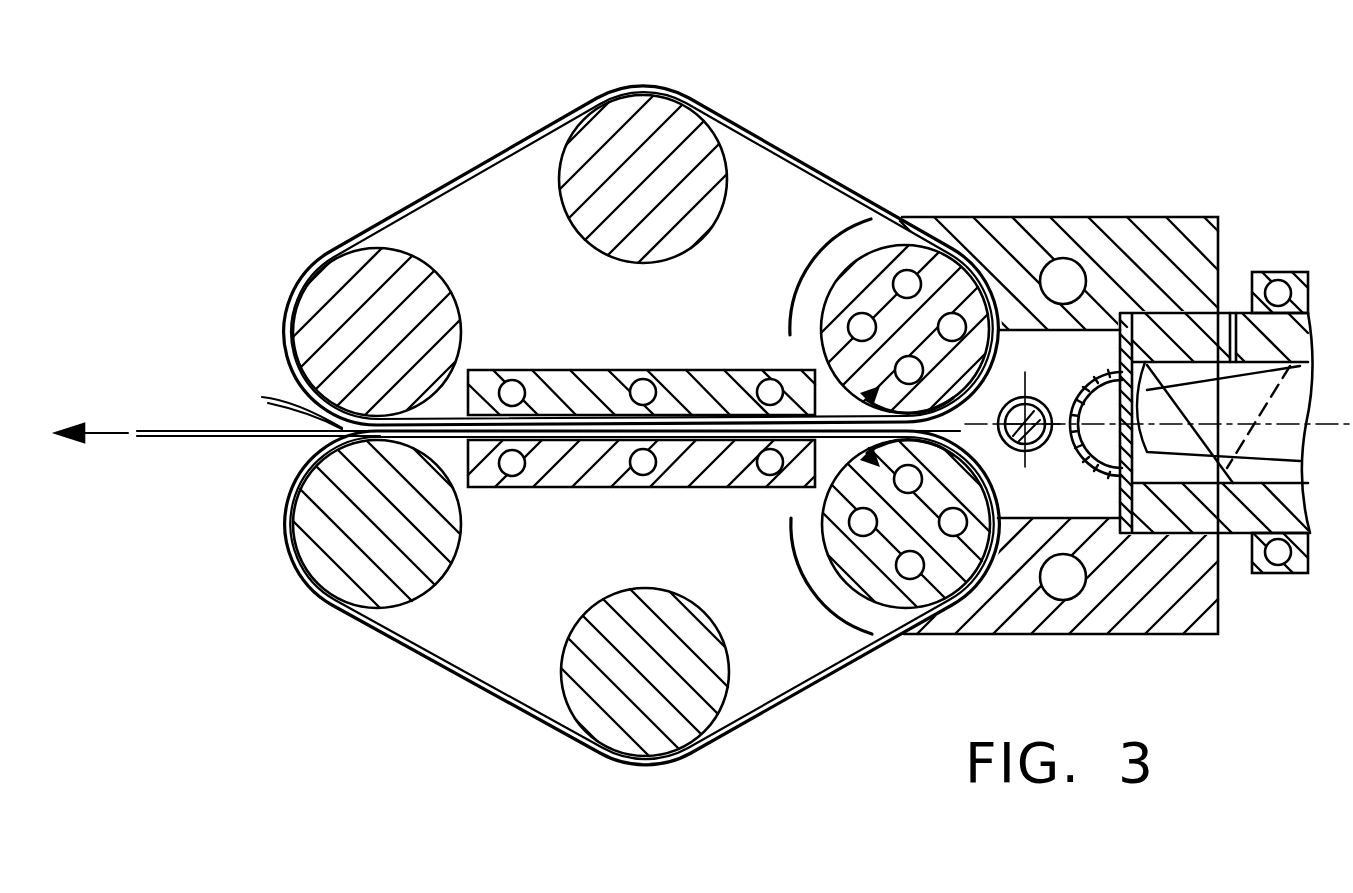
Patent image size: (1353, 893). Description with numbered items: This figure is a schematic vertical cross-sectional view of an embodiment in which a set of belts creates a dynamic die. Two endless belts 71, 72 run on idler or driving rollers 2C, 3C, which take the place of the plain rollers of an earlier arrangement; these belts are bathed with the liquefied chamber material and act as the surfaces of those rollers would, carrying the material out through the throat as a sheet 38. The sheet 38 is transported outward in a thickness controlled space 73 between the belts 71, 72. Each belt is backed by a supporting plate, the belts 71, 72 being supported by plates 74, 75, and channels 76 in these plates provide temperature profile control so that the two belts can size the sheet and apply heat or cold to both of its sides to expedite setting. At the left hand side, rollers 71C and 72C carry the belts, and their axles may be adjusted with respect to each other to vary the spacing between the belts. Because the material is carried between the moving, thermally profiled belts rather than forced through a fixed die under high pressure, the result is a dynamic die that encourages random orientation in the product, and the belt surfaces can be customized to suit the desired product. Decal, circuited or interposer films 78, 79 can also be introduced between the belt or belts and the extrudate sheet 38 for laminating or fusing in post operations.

The idler or driving roller 2C is at (944, 272).
The idler or driving roller 3C is at (885, 590).
The sheet 38 is at (246, 438).
The endless belt 71 is at (392, 622).
The left hand roller 71C is at (330, 566).
The endless belt 72 is at (408, 207).
The left hand roller 72C is at (330, 290).
The thickness controlled space 73 is at (262, 397).
The plate 74 is at (586, 488).
The plate 75 is at (700, 372).
The channel 76 is at (513, 380).
The decal, circuited or interposer film 78 is at (636, 92).
The decal, circuited or interposer film 79 is at (640, 768).